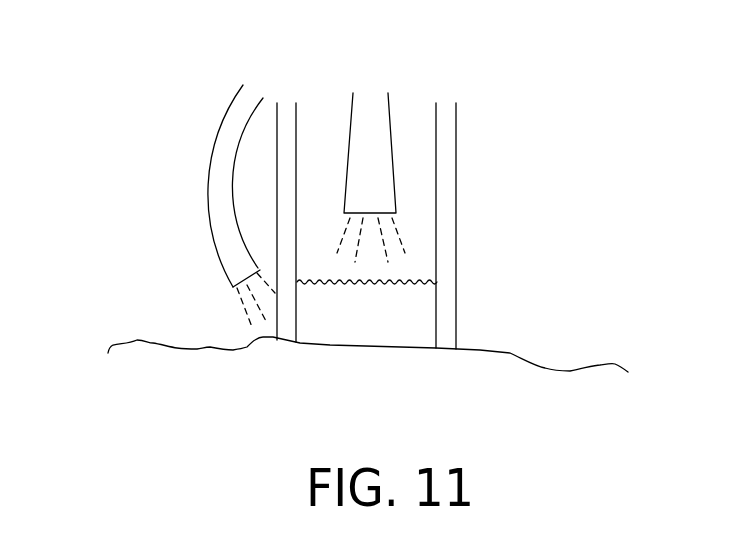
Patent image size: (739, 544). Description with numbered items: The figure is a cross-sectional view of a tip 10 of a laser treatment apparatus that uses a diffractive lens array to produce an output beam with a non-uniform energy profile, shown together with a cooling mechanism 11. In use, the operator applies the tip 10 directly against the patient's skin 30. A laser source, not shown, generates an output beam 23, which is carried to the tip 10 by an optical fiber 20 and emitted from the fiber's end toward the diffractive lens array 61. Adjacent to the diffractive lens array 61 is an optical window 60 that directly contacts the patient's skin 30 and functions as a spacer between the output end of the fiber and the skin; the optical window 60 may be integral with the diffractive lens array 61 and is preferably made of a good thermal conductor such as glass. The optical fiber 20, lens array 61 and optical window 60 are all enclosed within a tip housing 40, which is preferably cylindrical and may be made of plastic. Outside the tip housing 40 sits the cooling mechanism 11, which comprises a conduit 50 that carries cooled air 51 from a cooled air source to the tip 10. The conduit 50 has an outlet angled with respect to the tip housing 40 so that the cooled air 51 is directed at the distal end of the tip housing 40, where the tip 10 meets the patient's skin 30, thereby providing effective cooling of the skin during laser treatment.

The tip 10 is at (622, 103).
The cooling mechanism 11 is at (84, 80).
The optical fiber 20 is at (392, 127).
The output beam 23 is at (398, 238).
The patient's skin 30 is at (534, 443).
The tip housing 40 is at (457, 180).
The conduit 50 is at (209, 165).
The cooled air 51 is at (230, 310).
The optical window 60 is at (357, 330).
The diffractive lens array 61 is at (427, 278).